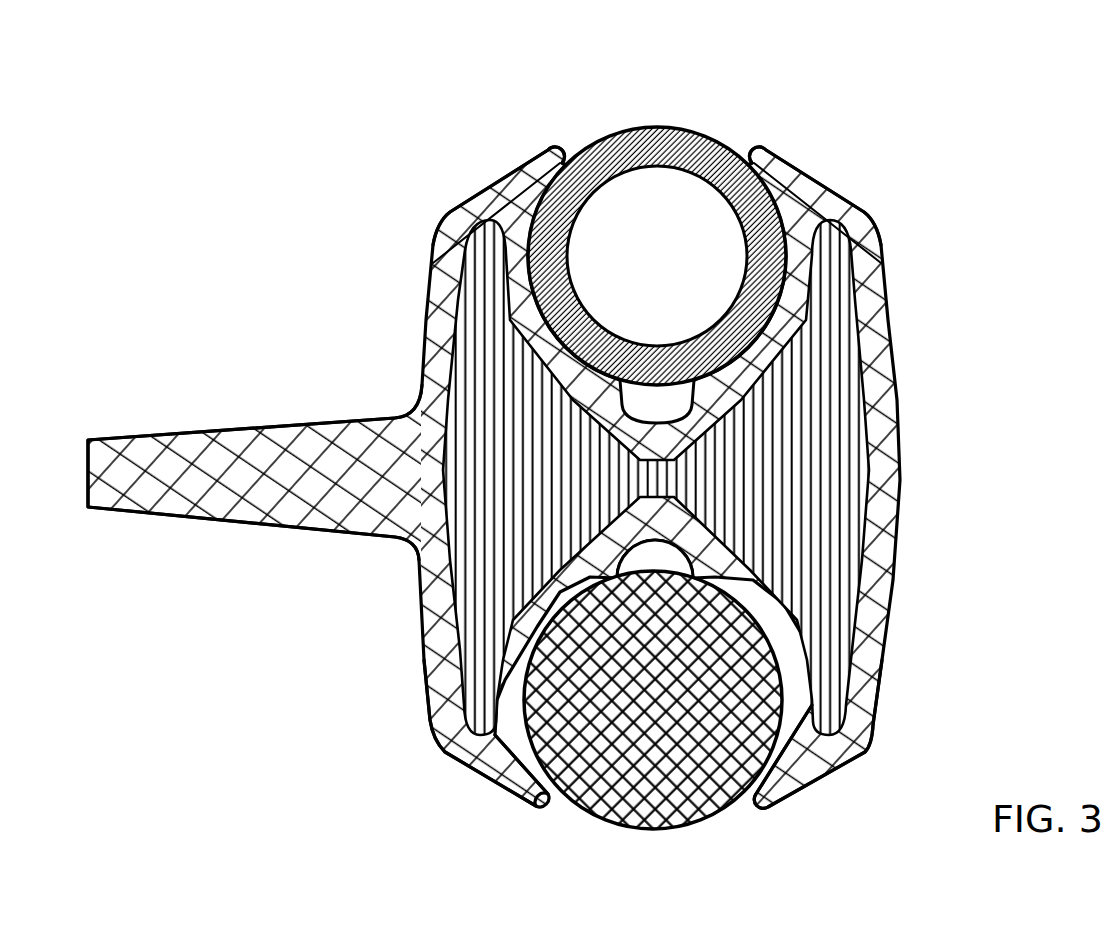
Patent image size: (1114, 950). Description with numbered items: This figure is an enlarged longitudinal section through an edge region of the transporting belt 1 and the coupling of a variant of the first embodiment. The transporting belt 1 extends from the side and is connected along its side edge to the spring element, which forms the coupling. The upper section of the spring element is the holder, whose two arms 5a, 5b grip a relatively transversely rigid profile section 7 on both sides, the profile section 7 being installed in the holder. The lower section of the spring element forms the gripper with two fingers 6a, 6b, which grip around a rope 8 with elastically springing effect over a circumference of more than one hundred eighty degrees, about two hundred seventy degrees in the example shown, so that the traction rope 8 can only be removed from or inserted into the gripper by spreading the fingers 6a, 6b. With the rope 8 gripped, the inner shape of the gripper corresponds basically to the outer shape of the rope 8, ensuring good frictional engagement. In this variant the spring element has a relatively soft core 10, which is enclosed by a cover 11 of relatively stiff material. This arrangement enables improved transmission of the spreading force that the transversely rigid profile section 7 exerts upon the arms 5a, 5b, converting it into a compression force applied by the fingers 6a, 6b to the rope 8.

The transporting belt 1 is at (134, 452).
The arm of the holder 5a is at (845, 210).
The arm of the holder 5b is at (466, 210).
The finger of the gripper 6a is at (848, 737).
The finger of the gripper 6b is at (447, 715).
The profile section 7 is at (648, 128).
The rope 8 is at (663, 805).
The core 10 is at (820, 497).
The cover 11 is at (886, 408).